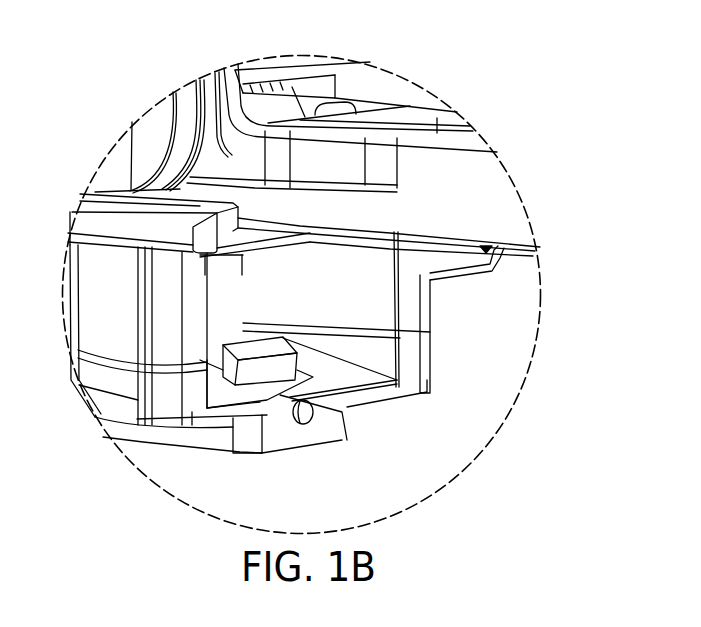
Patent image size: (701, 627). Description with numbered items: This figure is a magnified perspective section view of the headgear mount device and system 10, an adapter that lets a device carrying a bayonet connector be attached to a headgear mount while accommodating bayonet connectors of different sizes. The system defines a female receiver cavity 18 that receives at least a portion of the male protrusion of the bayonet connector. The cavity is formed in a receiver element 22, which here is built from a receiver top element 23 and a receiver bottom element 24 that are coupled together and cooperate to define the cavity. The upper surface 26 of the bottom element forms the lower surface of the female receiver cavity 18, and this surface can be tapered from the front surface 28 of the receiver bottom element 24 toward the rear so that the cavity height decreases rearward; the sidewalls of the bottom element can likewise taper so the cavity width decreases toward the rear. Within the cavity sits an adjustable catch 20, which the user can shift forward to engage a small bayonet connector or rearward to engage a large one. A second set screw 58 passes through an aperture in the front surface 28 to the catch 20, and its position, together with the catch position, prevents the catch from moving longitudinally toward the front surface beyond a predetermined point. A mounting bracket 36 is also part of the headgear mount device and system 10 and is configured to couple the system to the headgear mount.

The headgear mount device and system 10 is at (553, 198).
The female receiver cavity 18 is at (388, 301).
The adjustable catch 20 is at (267, 373).
The receiver element 22 is at (100, 290).
The receiver top element 23 is at (98, 313).
The receiver bottom element 24 is at (97, 388).
The upper surface 26 is at (345, 383).
The front surface 28 is at (192, 412).
The mounting bracket 36 is at (100, 207).
The second set screw 58 is at (303, 424).